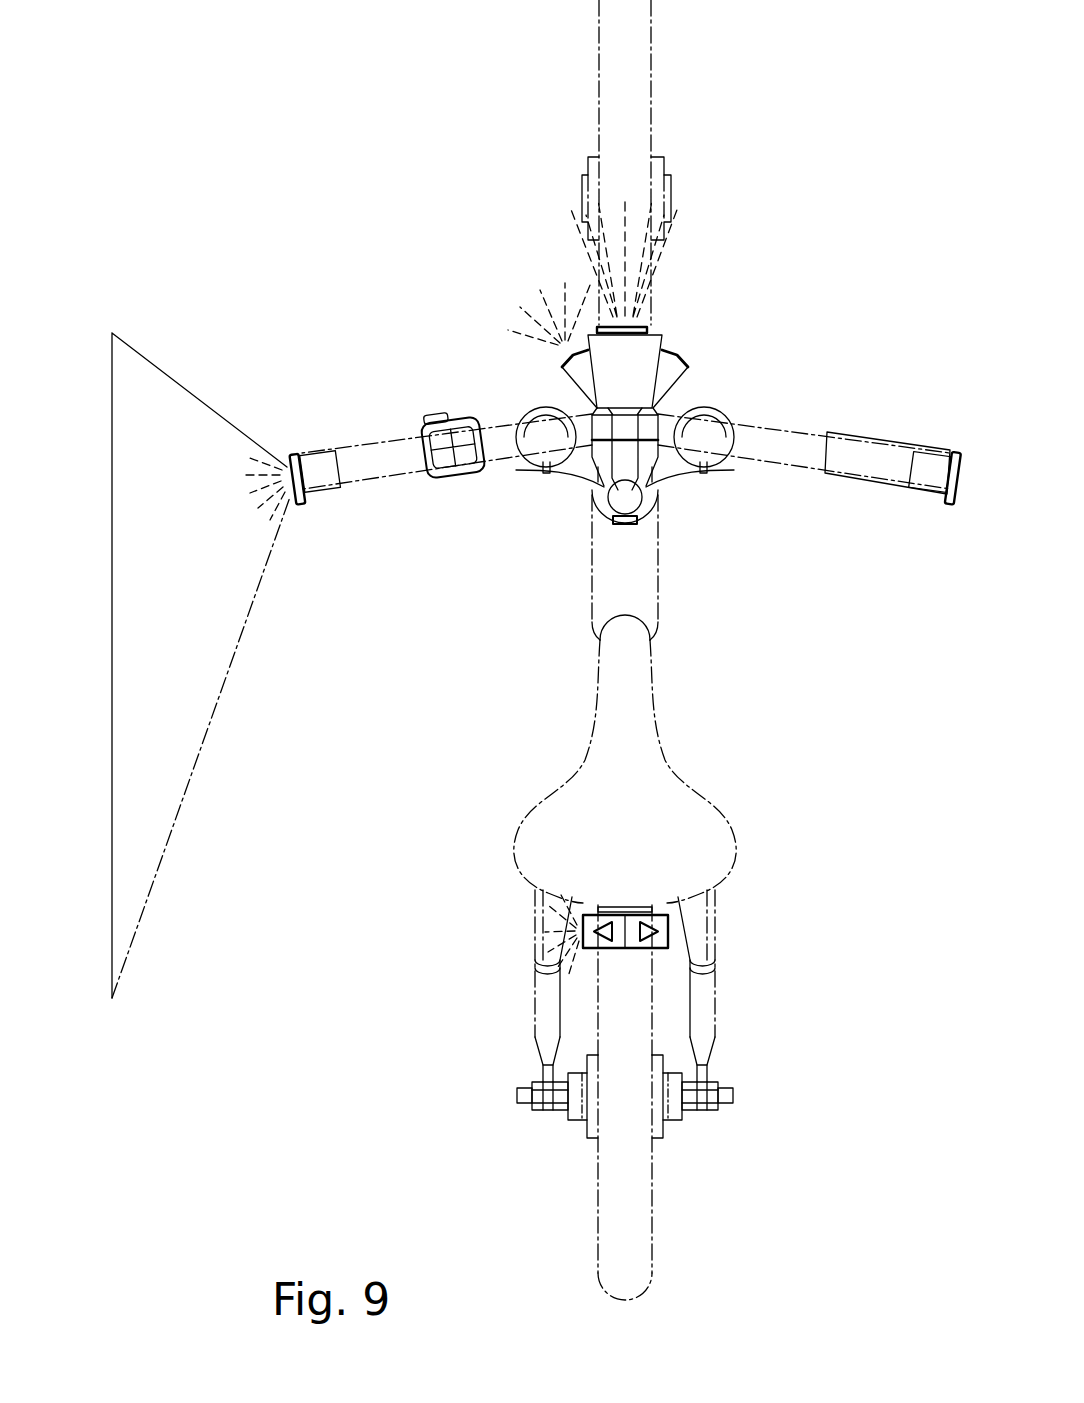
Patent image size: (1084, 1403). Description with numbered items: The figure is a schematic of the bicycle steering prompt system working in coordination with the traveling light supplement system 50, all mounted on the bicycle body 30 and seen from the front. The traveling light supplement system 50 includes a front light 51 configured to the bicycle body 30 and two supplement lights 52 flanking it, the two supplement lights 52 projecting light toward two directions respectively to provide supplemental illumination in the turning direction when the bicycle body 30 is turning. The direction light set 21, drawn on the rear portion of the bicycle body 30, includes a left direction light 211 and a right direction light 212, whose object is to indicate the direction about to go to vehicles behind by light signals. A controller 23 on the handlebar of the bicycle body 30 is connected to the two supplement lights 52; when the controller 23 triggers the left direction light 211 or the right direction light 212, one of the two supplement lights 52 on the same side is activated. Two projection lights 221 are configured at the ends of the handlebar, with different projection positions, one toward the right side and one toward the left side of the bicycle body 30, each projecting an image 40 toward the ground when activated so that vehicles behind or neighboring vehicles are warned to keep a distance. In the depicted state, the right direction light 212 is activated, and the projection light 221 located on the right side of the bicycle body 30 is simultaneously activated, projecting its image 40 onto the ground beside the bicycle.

The direction light set 21 is at (641, 915).
The controller 23 is at (455, 477).
The bicycle body 30 is at (777, 461).
The image 40 is at (112, 637).
The traveling light supplement system 50 is at (646, 334).
The front light 51 is at (610, 347).
The supplement lights 52 is at (582, 373).
The left direction light 211 is at (615, 945).
The right direction light 212 is at (635, 945).
The projection lights 221 is at (318, 452).